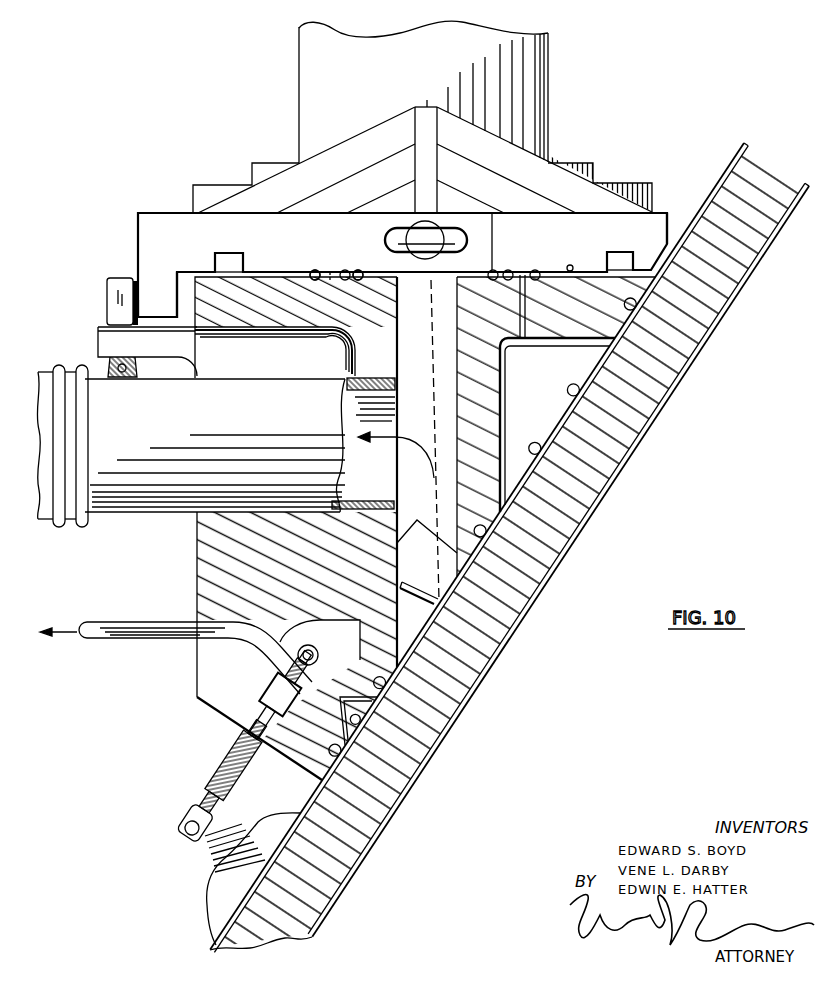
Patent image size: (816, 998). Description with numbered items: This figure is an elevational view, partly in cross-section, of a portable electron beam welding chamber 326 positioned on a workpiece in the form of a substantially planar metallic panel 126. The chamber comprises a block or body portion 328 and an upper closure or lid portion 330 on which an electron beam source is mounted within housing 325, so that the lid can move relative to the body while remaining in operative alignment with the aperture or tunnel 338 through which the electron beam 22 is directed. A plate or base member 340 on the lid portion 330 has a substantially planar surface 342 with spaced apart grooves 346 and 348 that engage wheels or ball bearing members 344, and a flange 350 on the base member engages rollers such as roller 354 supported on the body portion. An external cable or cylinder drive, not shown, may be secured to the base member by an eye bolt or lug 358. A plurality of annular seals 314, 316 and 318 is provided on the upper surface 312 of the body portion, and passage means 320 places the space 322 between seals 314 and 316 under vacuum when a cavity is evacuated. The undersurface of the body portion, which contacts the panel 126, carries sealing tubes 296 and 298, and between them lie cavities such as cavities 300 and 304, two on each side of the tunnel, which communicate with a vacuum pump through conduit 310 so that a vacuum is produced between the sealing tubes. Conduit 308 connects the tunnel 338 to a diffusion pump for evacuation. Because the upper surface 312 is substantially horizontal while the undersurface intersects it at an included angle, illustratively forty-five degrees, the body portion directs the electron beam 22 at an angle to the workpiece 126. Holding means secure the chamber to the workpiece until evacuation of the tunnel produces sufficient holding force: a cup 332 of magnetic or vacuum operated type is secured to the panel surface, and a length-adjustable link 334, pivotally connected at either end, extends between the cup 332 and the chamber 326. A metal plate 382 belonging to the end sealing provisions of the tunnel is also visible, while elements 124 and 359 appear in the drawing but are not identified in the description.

The electron beam 22 is at (432, 303).
The stop tab 124 is at (410, 593).
The workpiece panel 126 is at (737, 152).
The sealing tube 296 is at (387, 686).
The sealing tube 298 is at (339, 763).
The cavity 300 is at (548, 415).
The cavity 304 is at (372, 720).
The conduit 308 is at (128, 500).
The conduit 310 is at (125, 627).
The upper surface 312 is at (287, 295).
The annular seal 314 is at (313, 270).
The annular seal 316 is at (338, 268).
The annular seal 318 is at (357, 270).
The passage means 320 is at (526, 308).
The space 322 is at (330, 282).
The housing 325 is at (549, 99).
The portable chamber 326 is at (227, 183).
The body portion 328 is at (231, 573).
The upper closure or lid portion 330 is at (169, 230).
The cup 332 is at (213, 874).
The link 334 is at (190, 813).
The tunnel 338 is at (356, 362).
The base member 340 is at (657, 225).
The planar surface 342 is at (582, 256).
The ball bearing members 344 is at (227, 253).
The groove 346 is at (217, 267).
The groove 348 is at (640, 253).
The flange 350 is at (160, 278).
The roller 354 is at (106, 301).
The eye bolt or lug 358 is at (467, 236).
The arm 359 is at (186, 302).
The metal plate 382 is at (413, 549).